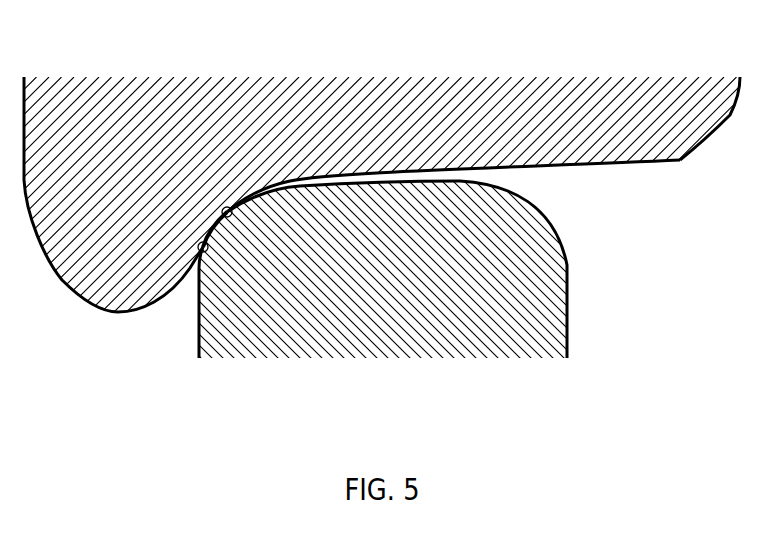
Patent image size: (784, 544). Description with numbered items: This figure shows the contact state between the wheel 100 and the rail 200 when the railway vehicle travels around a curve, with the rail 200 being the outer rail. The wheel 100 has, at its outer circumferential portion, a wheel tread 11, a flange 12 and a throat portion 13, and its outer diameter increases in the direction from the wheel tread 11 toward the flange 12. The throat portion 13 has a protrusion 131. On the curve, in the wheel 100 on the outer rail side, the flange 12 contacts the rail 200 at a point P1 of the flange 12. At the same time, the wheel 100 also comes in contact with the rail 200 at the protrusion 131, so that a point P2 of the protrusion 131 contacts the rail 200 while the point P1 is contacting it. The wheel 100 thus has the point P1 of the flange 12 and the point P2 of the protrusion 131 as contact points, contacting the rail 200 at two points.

The wheel 100 is at (392, 190).
The wheel tread 11 is at (578, 163).
The flange 12 is at (161, 314).
The throat portion 13 is at (272, 187).
The protrusion 131 is at (229, 217).
The rail 200 is at (379, 290).
The point of the flange P1 is at (188, 232).
The point of the protrusion P2 is at (219, 194).